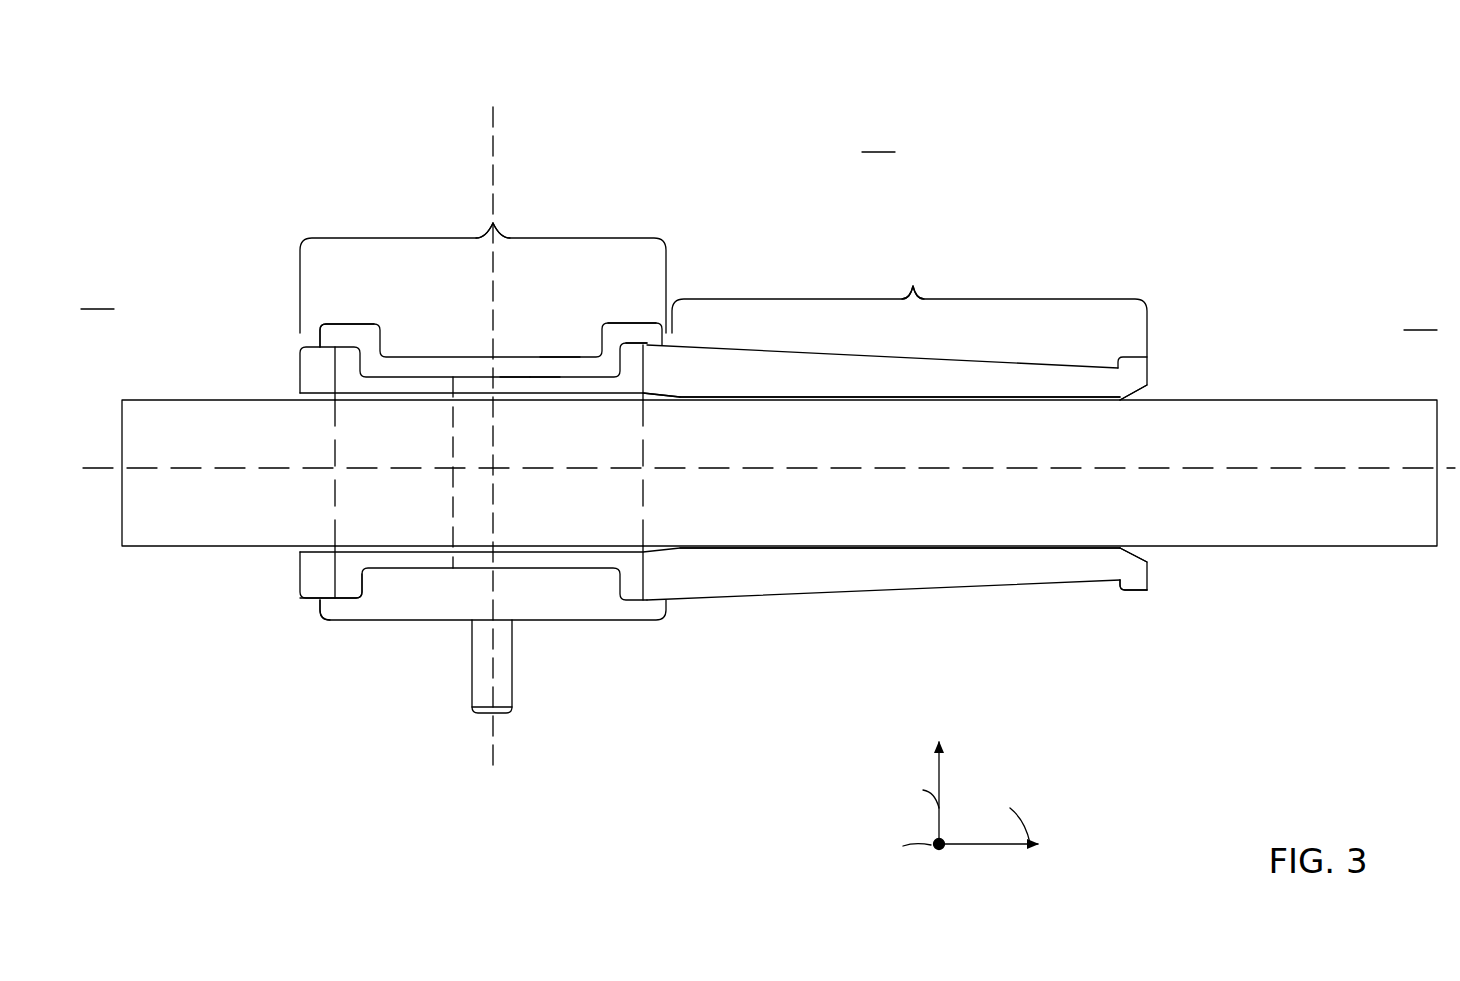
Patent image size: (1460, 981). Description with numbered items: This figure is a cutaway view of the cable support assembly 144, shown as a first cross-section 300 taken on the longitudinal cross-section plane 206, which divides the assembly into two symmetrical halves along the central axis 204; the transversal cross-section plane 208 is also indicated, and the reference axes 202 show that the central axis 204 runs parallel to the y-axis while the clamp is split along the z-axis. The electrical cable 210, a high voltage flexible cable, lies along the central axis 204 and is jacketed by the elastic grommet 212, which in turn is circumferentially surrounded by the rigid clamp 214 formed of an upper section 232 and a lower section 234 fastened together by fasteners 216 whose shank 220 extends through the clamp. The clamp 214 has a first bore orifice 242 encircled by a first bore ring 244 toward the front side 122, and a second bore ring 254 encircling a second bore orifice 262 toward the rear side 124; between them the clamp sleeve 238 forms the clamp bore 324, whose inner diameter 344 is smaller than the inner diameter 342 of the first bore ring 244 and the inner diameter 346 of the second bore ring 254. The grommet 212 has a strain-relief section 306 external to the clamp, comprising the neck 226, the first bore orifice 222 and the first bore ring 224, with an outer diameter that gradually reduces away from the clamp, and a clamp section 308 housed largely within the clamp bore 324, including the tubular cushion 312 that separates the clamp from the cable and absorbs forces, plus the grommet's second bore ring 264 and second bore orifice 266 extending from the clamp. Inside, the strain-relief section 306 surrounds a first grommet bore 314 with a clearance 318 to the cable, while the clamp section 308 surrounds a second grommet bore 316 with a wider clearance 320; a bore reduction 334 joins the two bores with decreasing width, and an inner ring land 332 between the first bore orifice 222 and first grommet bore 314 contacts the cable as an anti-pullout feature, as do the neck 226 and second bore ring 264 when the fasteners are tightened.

The front side 122 is at (1421, 318).
The rear side 124 is at (98, 297).
The cable support assembly 144 is at (317, 212).
The reference axes 202 is at (887, 792).
The central axis 204 is at (83, 468).
The longitudinal cross-section plane 206 is at (909, 264).
The transversal cross-section plane 208 is at (493, 128).
The electrical cable 210 is at (1350, 400).
The grommet 212 is at (843, 330).
The clamp 214 is at (447, 252).
The fasteners 216 is at (450, 683).
The shank 220 is at (483, 658).
The first bore orifice 222 is at (1142, 550).
The first bore ring 224 is at (1132, 570).
The neck 226 is at (760, 570).
The upper section 232 is at (417, 353).
The lower section 234 is at (608, 617).
The clamp sleeve 238 is at (553, 367).
The first bore orifice 242 is at (650, 343).
The first bore ring 244 is at (632, 333).
The second bore ring 254 is at (352, 333).
The second bore orifice 262 is at (387, 377).
The second bore ring 264 is at (320, 337).
The second bore orifice 266 is at (300, 392).
The first cross-section 300 is at (1145, 150).
The strain-relief section 306 is at (913, 286).
The clamp section 308 is at (483, 237).
The tubular cushion 312 is at (547, 383).
The first grommet bore 314 is at (1003, 398).
The second grommet bore 316 is at (512, 393).
The clearance 318 is at (950, 398).
The clearance 320 is at (435, 397).
The clamp bore 324 is at (306, 347).
The inner ring land 332 is at (1120, 400).
The bore reduction 334 is at (678, 395).
The inner diameter 342 is at (643, 512).
The inner diameter 344 is at (450, 457).
The inner diameter 346 is at (333, 512).